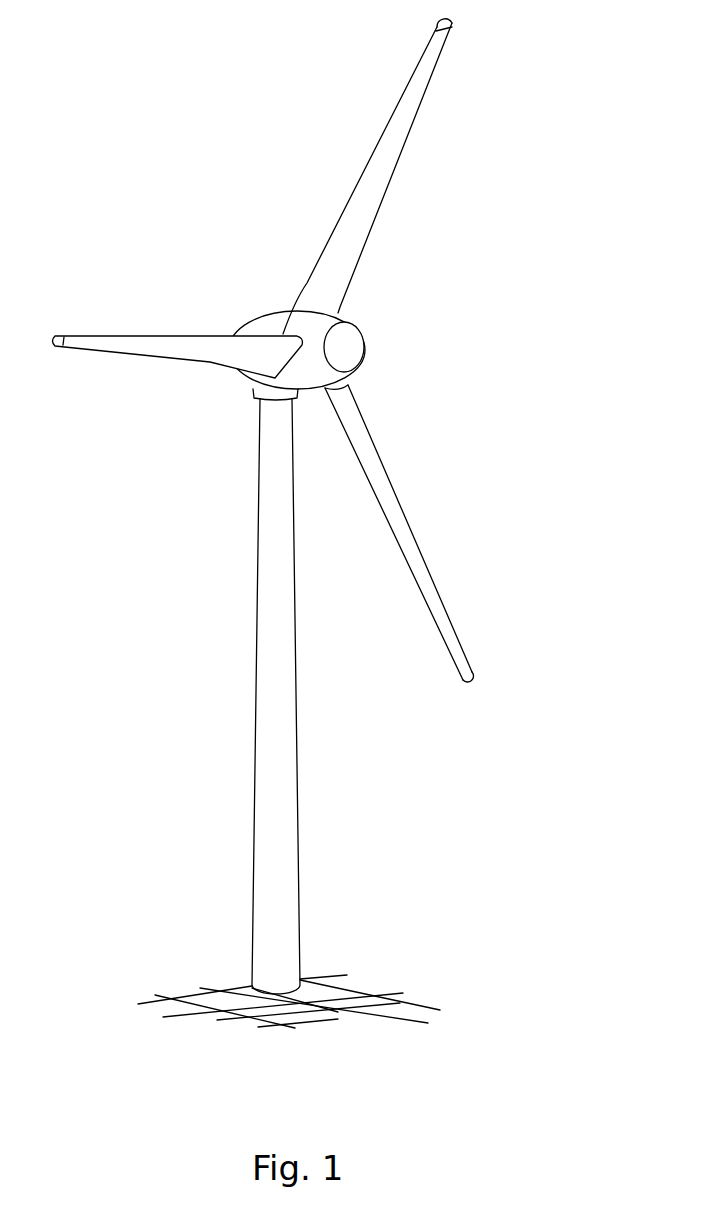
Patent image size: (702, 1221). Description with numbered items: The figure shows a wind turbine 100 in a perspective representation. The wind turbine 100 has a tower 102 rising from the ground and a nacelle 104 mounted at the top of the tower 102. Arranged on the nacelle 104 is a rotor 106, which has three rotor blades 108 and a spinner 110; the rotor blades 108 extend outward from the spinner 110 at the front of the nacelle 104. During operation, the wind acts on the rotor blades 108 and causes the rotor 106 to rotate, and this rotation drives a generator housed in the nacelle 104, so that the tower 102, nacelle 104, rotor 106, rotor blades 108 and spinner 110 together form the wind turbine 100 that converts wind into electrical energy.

The wind turbine 100 is at (310, 523).
The tower 102 is at (283, 784).
The nacelle 104 is at (270, 326).
The rotor 106 is at (310, 350).
The rotor blades 108 is at (117, 334).
The spinner 110 is at (348, 348).